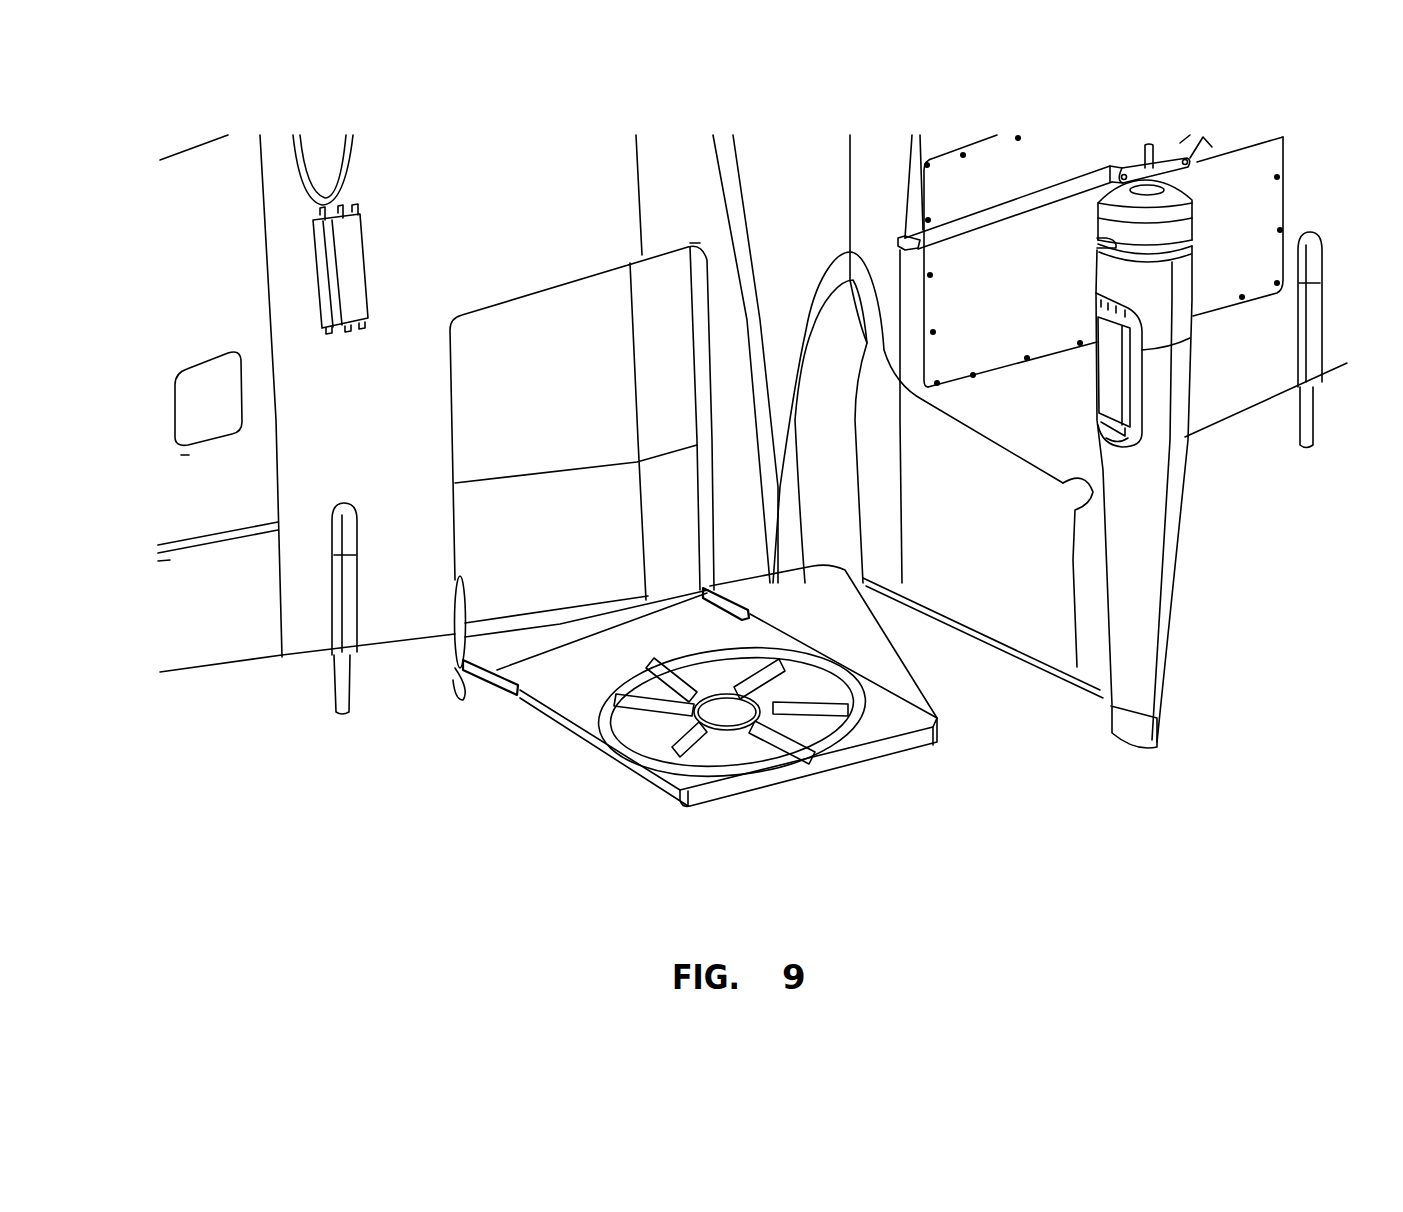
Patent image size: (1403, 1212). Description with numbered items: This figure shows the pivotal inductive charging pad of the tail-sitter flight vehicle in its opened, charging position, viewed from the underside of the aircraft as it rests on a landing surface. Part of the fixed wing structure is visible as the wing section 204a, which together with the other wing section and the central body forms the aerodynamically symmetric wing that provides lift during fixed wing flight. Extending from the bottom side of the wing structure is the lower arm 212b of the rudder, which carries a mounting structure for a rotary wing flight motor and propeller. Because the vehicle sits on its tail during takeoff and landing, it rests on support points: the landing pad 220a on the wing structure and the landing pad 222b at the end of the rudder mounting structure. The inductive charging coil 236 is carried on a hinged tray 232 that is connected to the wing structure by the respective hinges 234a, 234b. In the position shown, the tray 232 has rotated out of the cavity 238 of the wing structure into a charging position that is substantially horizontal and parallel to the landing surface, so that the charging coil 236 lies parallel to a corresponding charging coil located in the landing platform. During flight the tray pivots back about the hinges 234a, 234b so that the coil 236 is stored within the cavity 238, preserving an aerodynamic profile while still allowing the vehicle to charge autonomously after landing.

The wing section 204a is at (205, 648).
The landing pad 220a is at (340, 717).
The cavity 238 is at (540, 302).
The hinge 234a is at (460, 672).
The hinge 234b is at (752, 603).
The hinged tray 232 is at (908, 740).
The charging coil 236 is at (778, 740).
The lower arm of rudder 212b is at (993, 600).
The landing pad 222b is at (1127, 723).